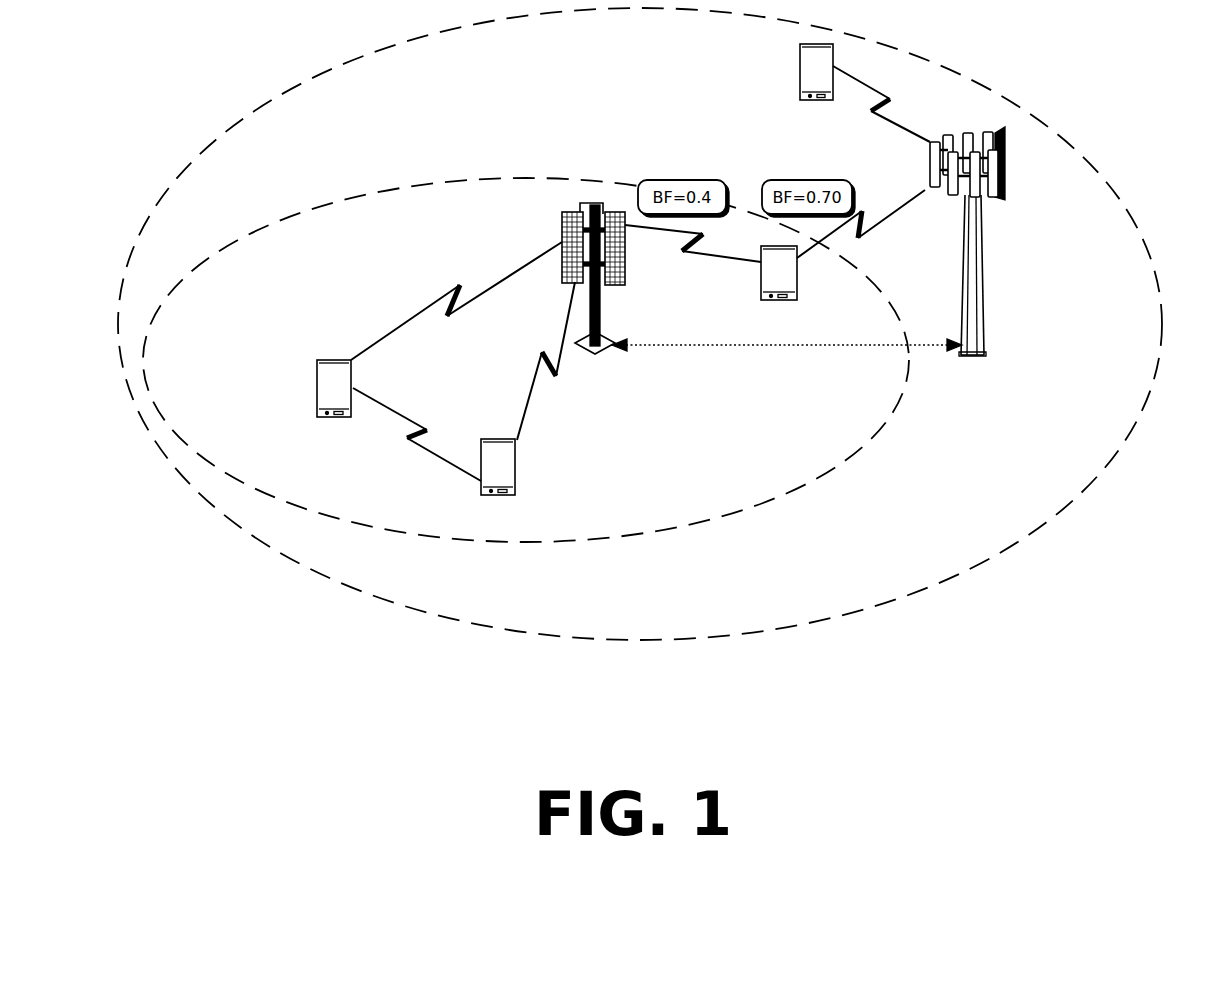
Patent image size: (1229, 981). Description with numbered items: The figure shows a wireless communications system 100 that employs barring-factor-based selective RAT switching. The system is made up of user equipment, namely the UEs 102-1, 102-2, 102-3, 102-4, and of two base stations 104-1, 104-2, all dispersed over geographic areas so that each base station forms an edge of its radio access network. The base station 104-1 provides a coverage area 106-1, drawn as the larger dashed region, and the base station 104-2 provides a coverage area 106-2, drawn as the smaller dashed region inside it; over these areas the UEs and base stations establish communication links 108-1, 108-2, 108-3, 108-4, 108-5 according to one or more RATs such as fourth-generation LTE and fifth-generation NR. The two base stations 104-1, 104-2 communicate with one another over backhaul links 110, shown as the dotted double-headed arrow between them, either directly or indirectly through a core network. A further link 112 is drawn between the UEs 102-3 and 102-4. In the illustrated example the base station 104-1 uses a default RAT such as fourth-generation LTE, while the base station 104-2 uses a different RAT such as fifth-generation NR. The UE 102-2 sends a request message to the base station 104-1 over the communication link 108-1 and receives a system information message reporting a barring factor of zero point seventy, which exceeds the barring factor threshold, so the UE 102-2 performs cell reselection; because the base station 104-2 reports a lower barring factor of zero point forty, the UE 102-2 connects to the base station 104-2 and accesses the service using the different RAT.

The wireless communications system 100 is at (1108, 50).
The UE 102-1 is at (800, 97).
The UE 102-2 is at (797, 290).
The UE 102-3 is at (515, 485).
The UE 102-4 is at (317, 412).
The base station 104-1 is at (985, 352).
The base station 104-2 is at (605, 348).
The coverage area 106-1 is at (1130, 433).
The coverage area 106-2 is at (745, 518).
The communication link 108-1 is at (880, 228).
The communication link 108-2 is at (872, 108).
The communication link 108-3 is at (692, 254).
The communication link 108-4 is at (540, 358).
The communication link 108-5 is at (455, 291).
The backhaul links 110 is at (778, 348).
The sidelink 112 is at (414, 442).